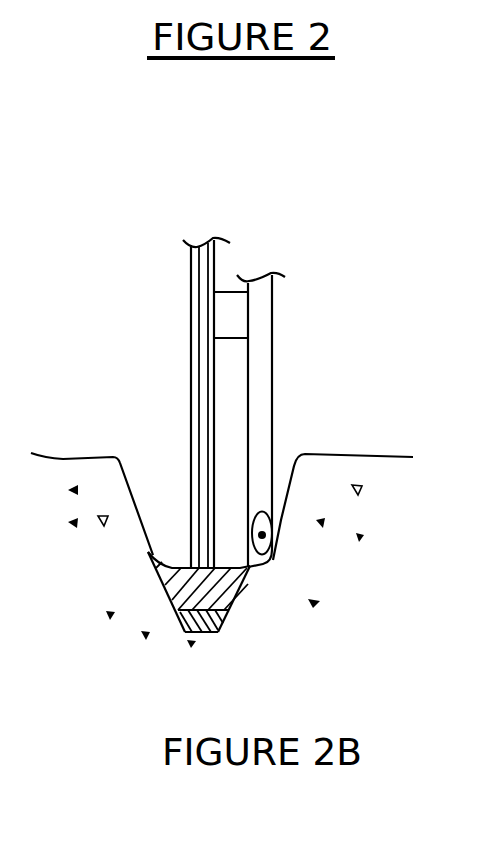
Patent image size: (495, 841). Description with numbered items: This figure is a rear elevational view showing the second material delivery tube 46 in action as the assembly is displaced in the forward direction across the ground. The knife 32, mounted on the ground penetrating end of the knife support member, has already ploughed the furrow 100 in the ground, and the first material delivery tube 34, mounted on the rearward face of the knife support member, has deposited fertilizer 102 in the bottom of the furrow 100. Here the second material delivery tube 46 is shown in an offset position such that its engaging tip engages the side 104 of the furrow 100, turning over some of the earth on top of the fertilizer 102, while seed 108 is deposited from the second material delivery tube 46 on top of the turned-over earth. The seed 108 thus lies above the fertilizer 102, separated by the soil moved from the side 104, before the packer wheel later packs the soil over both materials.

The knife 32 is at (191, 417).
The first material delivery tube 34 is at (203, 368).
The second material delivery tube 46 is at (272, 390).
The furrow 100 is at (231, 627).
The fertilizer 102 is at (212, 632).
The side of the furrow 104 is at (276, 553).
The seed 108 is at (264, 536).